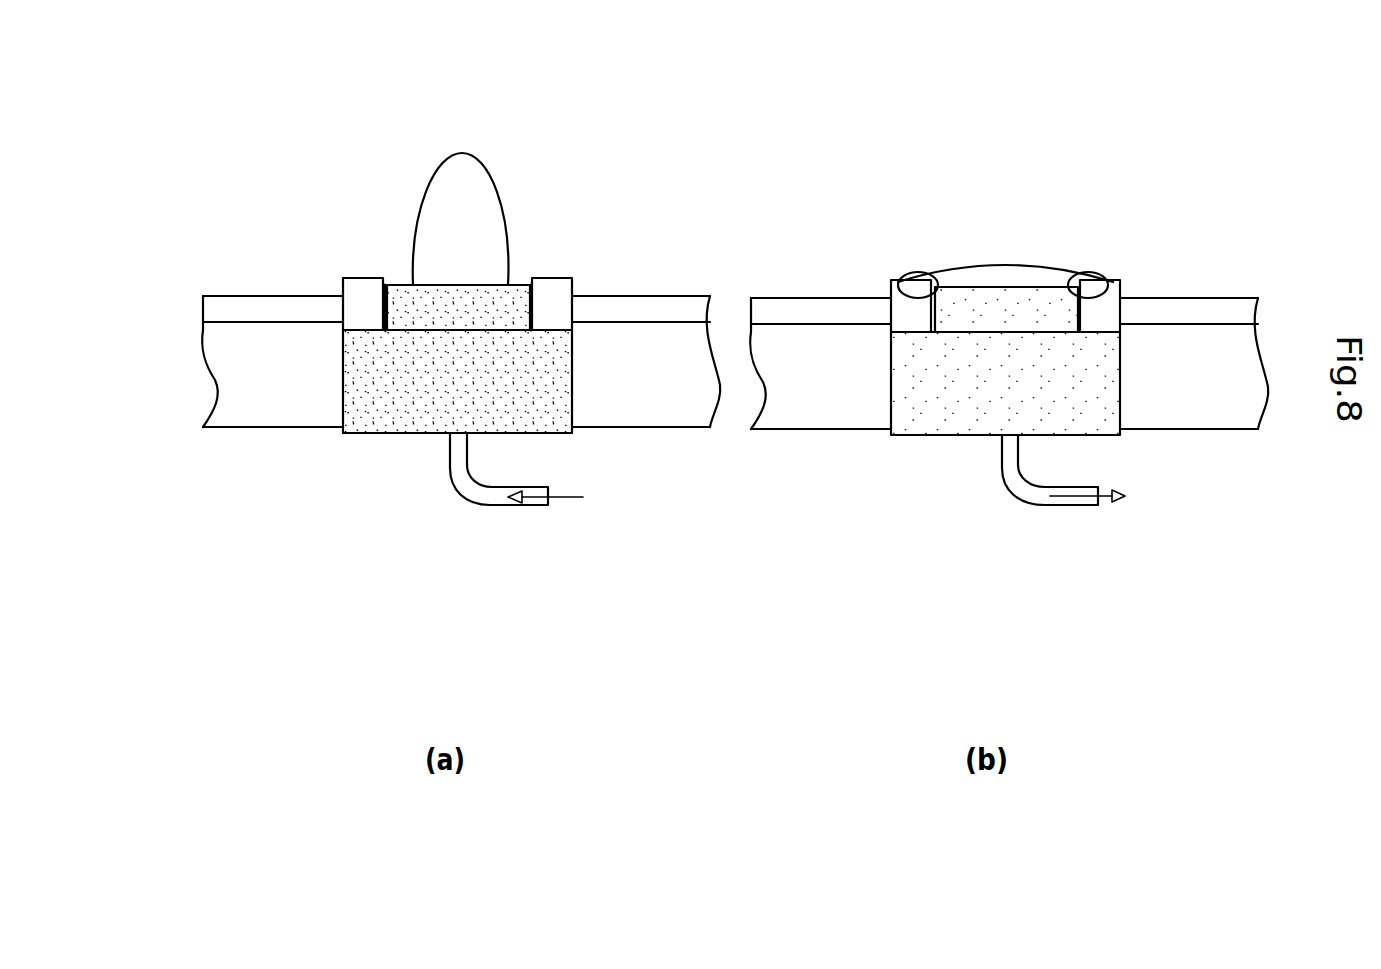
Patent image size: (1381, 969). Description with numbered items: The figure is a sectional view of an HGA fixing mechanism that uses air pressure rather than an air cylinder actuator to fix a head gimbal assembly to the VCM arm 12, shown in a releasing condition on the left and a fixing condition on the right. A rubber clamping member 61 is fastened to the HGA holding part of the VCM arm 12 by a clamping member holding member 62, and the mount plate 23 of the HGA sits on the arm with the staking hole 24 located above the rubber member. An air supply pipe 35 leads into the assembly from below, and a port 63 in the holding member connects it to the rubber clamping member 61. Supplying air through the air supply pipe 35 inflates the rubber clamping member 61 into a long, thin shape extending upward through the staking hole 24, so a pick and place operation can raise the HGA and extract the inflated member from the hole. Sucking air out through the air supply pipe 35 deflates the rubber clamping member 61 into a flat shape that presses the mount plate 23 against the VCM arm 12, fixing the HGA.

The VCM arm 12 is at (252, 350).
The mount plate 23 is at (289, 307).
The staking hole 24 is at (381, 276).
The air supply pipe 35 is at (479, 510).
The rubber clamping member 61 is at (438, 222).
The clamping member holding member 62 is at (468, 305).
The Port 63 is at (408, 410).